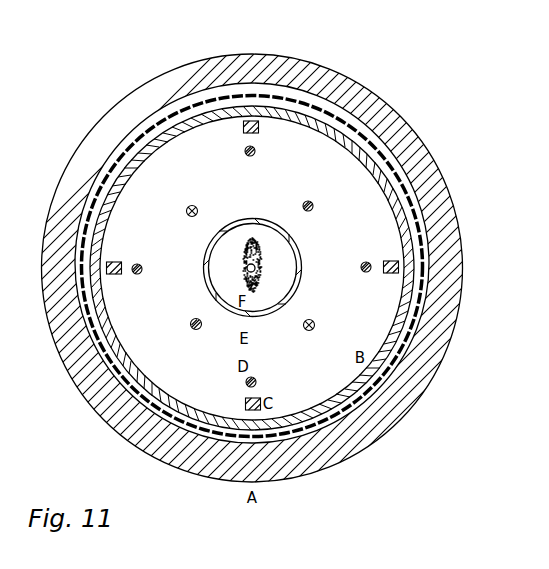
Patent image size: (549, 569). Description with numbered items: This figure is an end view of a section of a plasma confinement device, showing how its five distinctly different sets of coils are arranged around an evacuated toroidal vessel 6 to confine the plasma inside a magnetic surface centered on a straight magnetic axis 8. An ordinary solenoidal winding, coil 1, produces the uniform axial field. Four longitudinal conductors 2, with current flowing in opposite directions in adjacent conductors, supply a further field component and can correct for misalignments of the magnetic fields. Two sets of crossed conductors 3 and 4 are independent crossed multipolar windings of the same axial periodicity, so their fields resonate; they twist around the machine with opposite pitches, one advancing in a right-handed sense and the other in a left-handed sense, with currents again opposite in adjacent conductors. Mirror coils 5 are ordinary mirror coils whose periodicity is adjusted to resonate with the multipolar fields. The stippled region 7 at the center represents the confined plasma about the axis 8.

The coil 1 is at (43, 273).
The longitudinal conductors 2 is at (260, 128).
The crossed conductors 3 is at (254, 155).
The crossed conductors 4 is at (186, 207).
The mirror coils 5 is at (163, 140).
The evacuated toroidal vessel 6 is at (207, 253).
The flame 7 is at (257, 287).
The magnetic axis 8 is at (255, 265).